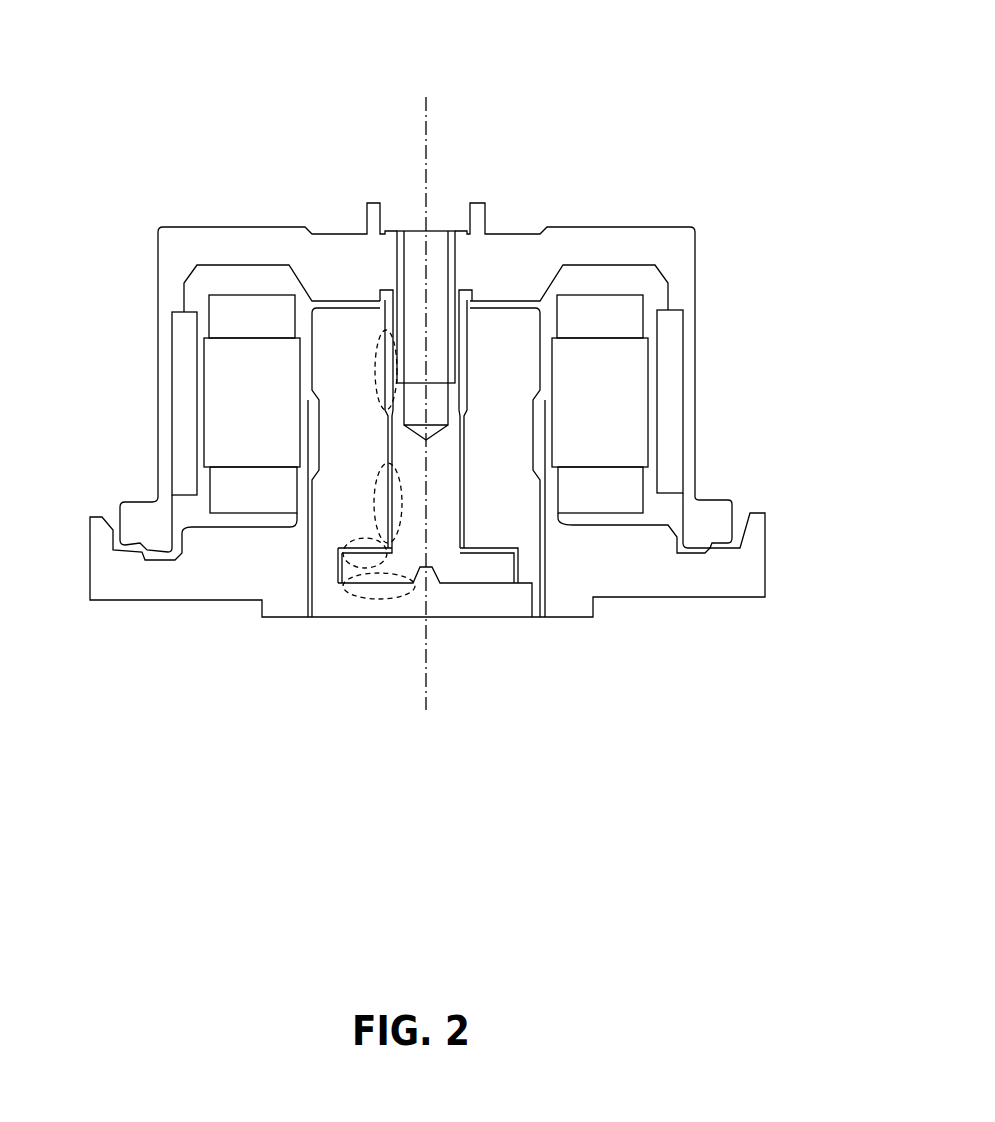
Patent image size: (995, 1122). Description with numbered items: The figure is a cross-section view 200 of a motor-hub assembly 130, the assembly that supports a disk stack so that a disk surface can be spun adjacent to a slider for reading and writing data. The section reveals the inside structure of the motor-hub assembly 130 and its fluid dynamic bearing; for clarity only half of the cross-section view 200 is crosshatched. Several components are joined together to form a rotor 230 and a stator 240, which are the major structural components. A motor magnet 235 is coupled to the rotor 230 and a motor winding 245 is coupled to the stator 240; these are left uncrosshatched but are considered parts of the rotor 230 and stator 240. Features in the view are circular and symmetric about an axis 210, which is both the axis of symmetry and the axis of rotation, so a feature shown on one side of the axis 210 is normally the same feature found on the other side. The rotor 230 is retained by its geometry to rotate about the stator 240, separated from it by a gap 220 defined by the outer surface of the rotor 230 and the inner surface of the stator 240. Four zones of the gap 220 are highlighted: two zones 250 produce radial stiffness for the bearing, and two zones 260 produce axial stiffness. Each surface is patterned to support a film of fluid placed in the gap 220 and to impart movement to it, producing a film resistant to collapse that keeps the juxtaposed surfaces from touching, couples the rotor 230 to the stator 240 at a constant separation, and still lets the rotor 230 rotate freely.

The cross-section view 200 is at (208, 46).
The motor-hub assembly 130 is at (712, 199).
The axis 210 is at (430, 141).
The gap 220 is at (465, 352).
The rotor 230 is at (677, 283).
The motor magnet 235 is at (667, 365).
The motor winding 245 is at (603, 432).
The stator 240 is at (737, 562).
The zones 250 is at (375, 490).
The zones 260 is at (360, 597).